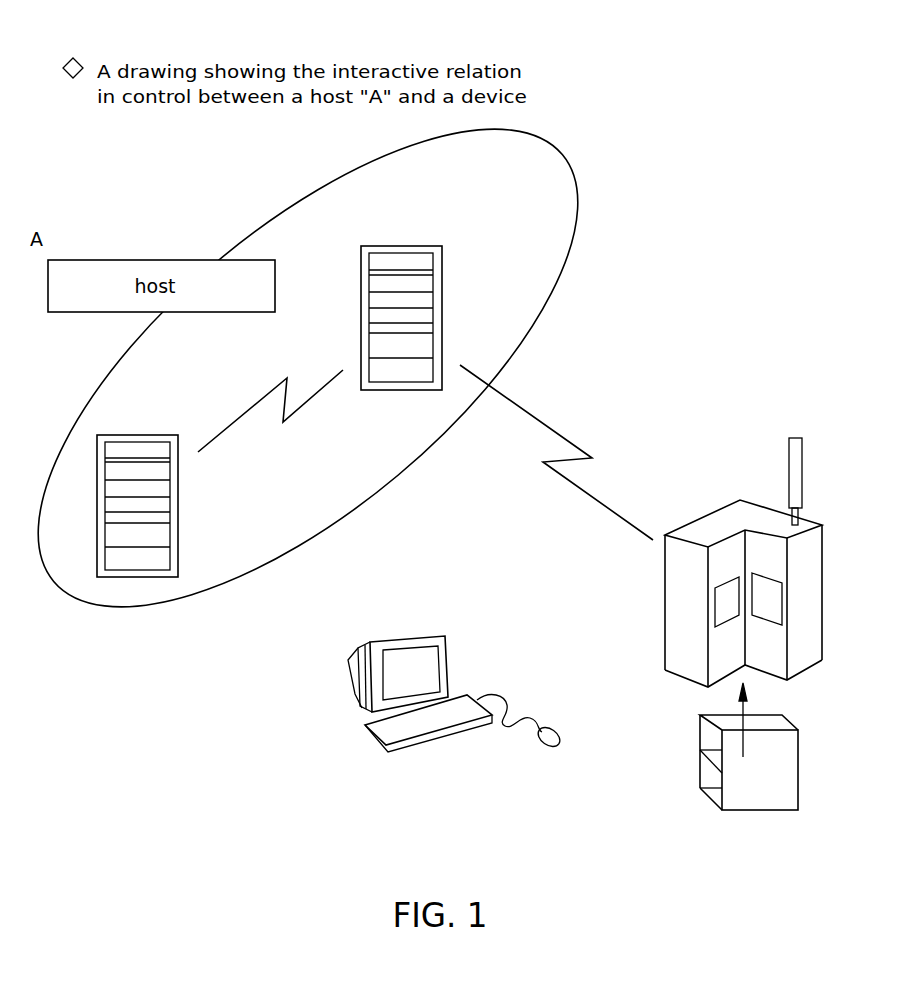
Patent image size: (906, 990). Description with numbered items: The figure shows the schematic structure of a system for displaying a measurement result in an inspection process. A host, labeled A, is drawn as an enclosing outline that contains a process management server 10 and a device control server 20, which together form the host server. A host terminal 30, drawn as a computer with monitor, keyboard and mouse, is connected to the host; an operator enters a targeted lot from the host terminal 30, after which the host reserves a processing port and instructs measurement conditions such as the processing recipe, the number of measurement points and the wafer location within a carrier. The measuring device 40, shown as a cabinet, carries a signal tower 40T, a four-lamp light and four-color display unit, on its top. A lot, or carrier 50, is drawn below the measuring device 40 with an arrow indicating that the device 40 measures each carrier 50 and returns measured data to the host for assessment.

The process management server 10 is at (145, 468).
The device control server 20 is at (407, 281).
The host terminal 30 is at (380, 620).
The measuring device 40 is at (722, 563).
The signal tower 40T is at (795, 469).
The lot (carrier) 50 is at (758, 774).